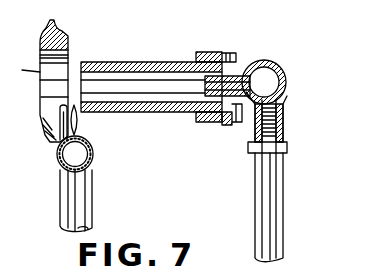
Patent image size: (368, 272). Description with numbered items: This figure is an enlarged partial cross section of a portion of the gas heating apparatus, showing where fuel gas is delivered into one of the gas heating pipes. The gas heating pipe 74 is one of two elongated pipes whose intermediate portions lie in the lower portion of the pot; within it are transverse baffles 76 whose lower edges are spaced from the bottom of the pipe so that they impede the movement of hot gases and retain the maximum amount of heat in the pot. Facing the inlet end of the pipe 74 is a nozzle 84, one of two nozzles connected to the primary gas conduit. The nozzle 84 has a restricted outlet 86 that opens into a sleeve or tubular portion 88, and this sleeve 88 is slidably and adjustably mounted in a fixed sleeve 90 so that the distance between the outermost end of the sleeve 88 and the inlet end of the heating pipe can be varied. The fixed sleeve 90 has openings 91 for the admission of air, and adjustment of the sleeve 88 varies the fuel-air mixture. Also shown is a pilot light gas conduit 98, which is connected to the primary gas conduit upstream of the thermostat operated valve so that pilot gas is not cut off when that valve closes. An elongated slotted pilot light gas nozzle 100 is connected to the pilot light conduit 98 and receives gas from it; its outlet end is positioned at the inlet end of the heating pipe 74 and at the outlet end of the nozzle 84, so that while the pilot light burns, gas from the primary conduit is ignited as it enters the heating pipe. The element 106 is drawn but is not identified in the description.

The gas heating pipe 74 is at (70, 60).
The baffle 76 is at (22, 70).
The nozzle 84 is at (294, 80).
The restricted outlet 86 is at (226, 118).
The sleeve or tubular portion 88 is at (182, 63).
The fixed sleeve 90 is at (258, 58).
The openings 91 is at (232, 59).
The pilot light gas conduit 98 is at (90, 206).
The pilot light gas nozzle 100 is at (93, 152).
The pin 106 is at (60, 118).